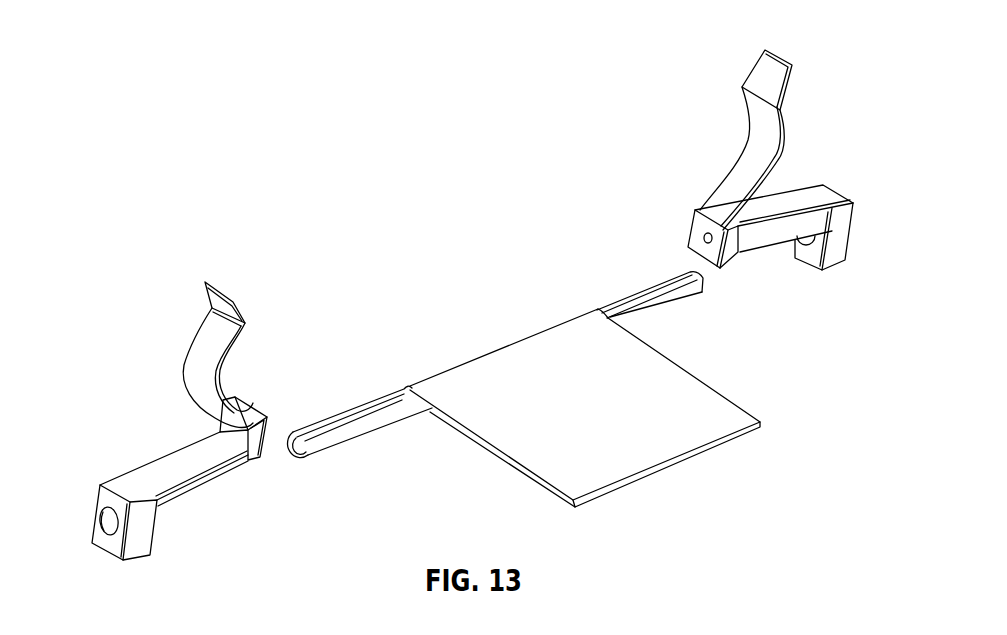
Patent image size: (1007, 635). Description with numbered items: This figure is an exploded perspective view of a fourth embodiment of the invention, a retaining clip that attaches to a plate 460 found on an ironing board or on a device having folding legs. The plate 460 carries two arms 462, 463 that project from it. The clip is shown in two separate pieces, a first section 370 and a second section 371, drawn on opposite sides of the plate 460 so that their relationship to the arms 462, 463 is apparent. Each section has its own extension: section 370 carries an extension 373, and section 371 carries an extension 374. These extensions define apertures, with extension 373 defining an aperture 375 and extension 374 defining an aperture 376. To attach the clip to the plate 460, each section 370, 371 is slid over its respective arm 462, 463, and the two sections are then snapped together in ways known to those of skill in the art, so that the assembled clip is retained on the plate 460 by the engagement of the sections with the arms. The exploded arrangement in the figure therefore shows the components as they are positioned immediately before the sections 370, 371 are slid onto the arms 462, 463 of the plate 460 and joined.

The section 370 is at (226, 303).
The section 371 is at (758, 77).
The extension 373 is at (145, 475).
The extension 374 is at (820, 200).
The aperture 375 is at (112, 523).
The aperture 376 is at (805, 245).
The plate 460 is at (697, 393).
The arm 462 is at (358, 400).
The arm 463 is at (660, 292).